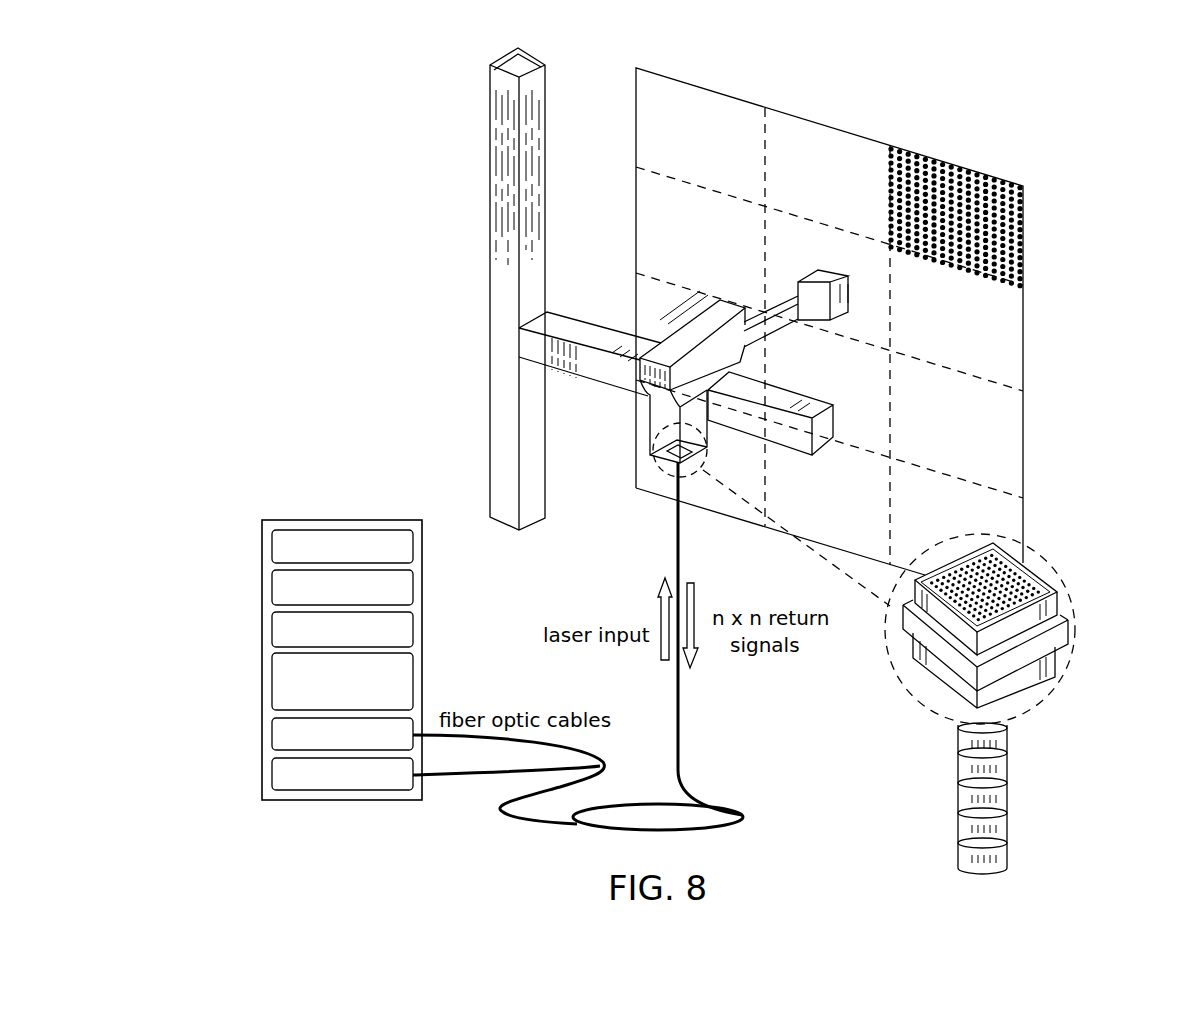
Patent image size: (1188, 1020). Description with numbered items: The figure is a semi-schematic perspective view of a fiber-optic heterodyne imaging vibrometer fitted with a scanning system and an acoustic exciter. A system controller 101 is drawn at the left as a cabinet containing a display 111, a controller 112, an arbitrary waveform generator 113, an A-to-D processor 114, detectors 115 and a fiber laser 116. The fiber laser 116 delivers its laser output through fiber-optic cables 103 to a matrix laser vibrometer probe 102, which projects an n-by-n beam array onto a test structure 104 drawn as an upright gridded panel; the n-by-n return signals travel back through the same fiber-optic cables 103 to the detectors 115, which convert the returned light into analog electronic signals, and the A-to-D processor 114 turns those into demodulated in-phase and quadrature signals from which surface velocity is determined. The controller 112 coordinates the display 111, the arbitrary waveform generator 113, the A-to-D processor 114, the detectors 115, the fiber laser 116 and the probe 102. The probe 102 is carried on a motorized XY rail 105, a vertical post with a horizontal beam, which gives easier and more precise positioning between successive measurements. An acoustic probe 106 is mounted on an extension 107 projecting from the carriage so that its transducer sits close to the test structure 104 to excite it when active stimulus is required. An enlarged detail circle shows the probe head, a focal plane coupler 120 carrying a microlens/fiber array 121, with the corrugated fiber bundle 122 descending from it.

The system controller 101 is at (422, 653).
The matrix laser vibrometer probe 102 is at (650, 426).
The fiber-optic cables 103 is at (680, 750).
The test structure 104 is at (1024, 355).
The motorized XY rail 105 is at (490, 338).
The acoustic probe 106 is at (812, 282).
The extension 107 is at (783, 335).
The display 111 is at (272, 548).
The controller 112 is at (272, 586).
The arbitrary waveform generator 113 is at (272, 628).
The A-to-D processor 114 is at (272, 681).
The detectors 115 is at (272, 735).
The fiber laser 116 is at (272, 775).
The focal plane coupler 120 is at (1067, 635).
The microlens/fiber array 121 is at (1047, 583).
The fiber bundle 122 is at (1010, 797).